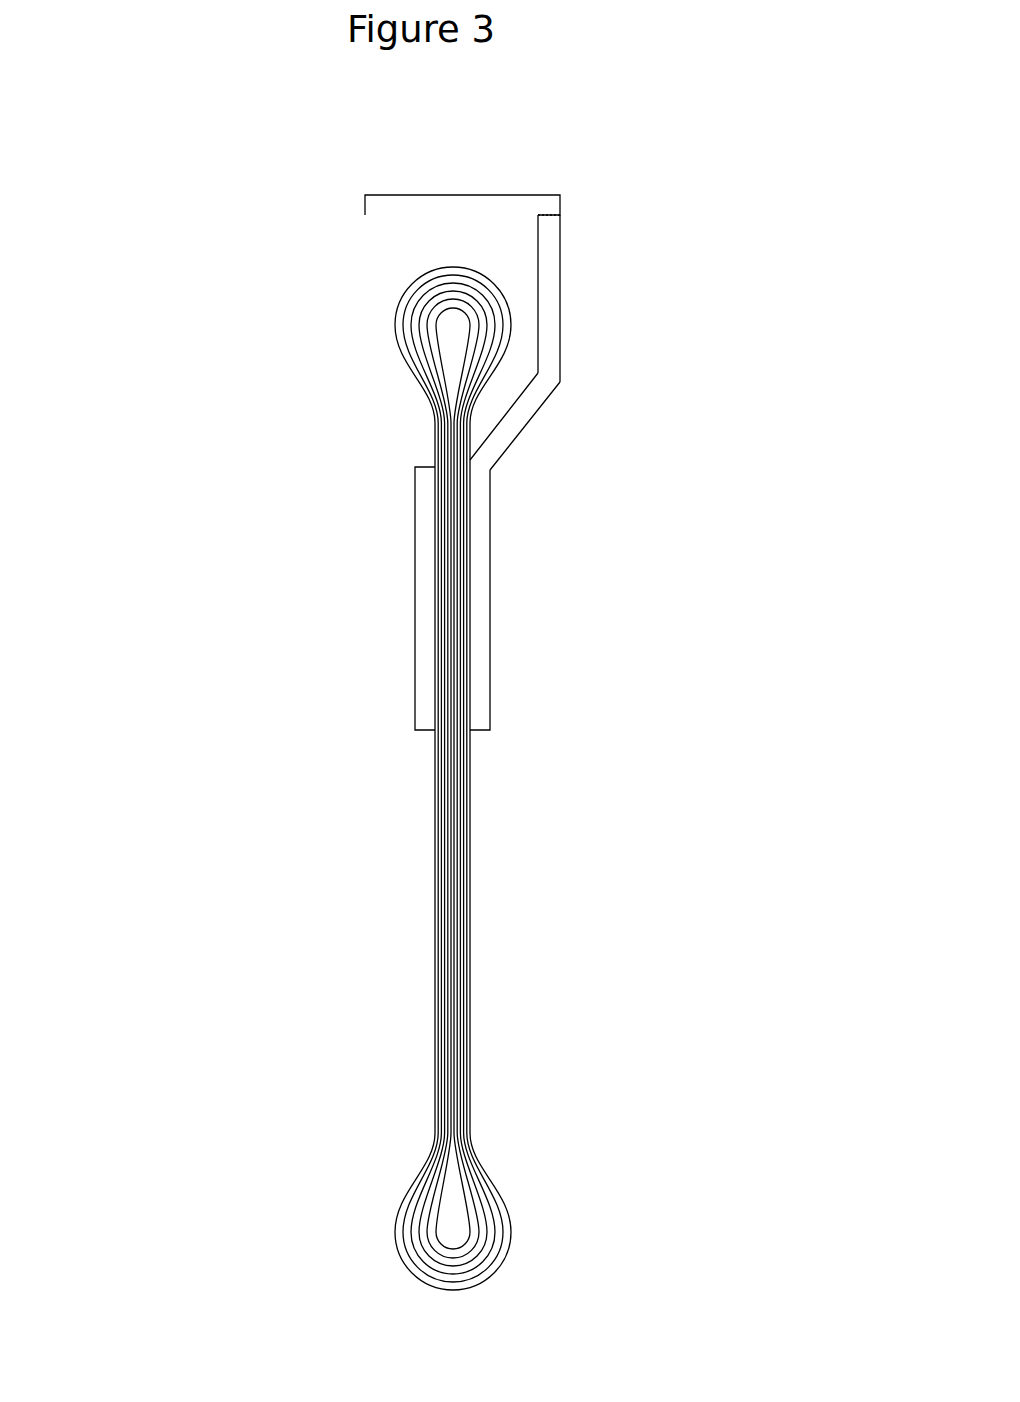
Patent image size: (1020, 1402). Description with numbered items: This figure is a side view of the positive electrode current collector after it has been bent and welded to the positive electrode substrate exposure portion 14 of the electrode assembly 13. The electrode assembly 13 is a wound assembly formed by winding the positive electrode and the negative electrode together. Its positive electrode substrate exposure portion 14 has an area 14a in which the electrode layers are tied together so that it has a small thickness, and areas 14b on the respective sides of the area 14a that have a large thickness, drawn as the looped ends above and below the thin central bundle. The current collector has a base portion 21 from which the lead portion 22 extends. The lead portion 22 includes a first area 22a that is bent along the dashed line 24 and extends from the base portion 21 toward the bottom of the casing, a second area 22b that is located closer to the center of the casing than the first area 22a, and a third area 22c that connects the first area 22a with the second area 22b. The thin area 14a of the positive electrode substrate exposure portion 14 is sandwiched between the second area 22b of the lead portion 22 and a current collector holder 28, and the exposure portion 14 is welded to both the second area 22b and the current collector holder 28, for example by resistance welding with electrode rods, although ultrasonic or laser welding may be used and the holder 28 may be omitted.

The electrode assembly 13 is at (519, 927).
The positive electrode substrate exposure portion 14 is at (107, 723).
The area having a small thickness 14a is at (436, 835).
The areas having a large thickness 14b is at (393, 333).
The base portion 21 is at (436, 194).
The lead portion 22 is at (687, 342).
The first area 22a is at (561, 337).
The second area 22b is at (493, 500).
The third area 22c is at (545, 402).
The dashed line 24 is at (551, 219).
The current collector holder 28 is at (414, 553).